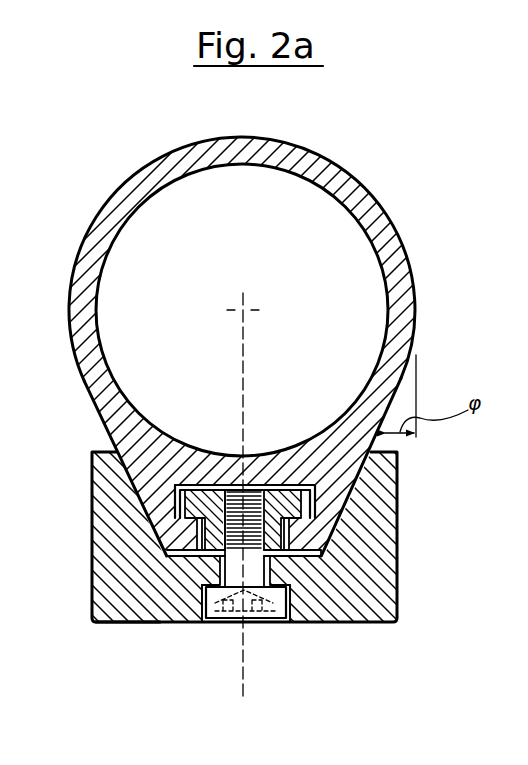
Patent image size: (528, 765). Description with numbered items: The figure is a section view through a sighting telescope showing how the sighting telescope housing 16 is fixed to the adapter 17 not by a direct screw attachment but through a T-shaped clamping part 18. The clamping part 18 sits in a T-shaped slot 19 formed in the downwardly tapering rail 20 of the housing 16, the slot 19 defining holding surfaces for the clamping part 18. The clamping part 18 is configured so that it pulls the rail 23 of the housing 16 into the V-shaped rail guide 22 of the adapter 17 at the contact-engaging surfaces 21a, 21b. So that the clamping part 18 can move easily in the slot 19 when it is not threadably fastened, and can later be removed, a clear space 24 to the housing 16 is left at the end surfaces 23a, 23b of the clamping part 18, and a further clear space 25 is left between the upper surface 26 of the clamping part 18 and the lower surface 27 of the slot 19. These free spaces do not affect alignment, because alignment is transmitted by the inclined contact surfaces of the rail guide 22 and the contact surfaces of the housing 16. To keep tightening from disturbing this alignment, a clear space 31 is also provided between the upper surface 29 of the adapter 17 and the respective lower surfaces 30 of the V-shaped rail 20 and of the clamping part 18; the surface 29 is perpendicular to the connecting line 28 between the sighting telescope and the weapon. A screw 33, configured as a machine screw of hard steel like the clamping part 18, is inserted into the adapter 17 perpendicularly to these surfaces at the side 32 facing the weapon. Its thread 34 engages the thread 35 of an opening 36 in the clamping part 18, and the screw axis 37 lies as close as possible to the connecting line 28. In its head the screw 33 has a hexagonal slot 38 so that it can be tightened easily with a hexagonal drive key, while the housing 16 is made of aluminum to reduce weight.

The sighting telescope housing 16 is at (391, 213).
The adapter 17 is at (400, 612).
The clamping part 18 is at (348, 509).
The slot 19 is at (192, 482).
The rail 20 is at (187, 522).
The contact-engaging surface 21a is at (189, 543).
The contact-engaging surface 21b is at (292, 547).
The V-shaped rail guide 22 is at (305, 524).
The rail 23 is at (147, 463).
The end surface 23a is at (171, 495).
The end surface 23b is at (321, 493).
The clear space 24 is at (172, 506).
The clear space 25 is at (318, 512).
The upper surface 26 is at (269, 483).
The lower surface 27 is at (286, 483).
The connecting line 28 is at (281, 629).
The upper surface 29 is at (200, 590).
The lower surface 30 is at (184, 556).
The clear space 31 is at (292, 603).
The side facing the weapon 32 is at (114, 625).
The screw 33 is at (220, 620).
The thread 34 is at (244, 488).
The thread 35 is at (251, 498).
The opening 36 is at (226, 488).
The screw axis 37 is at (246, 678).
The hexagonal slot 38 is at (258, 618).